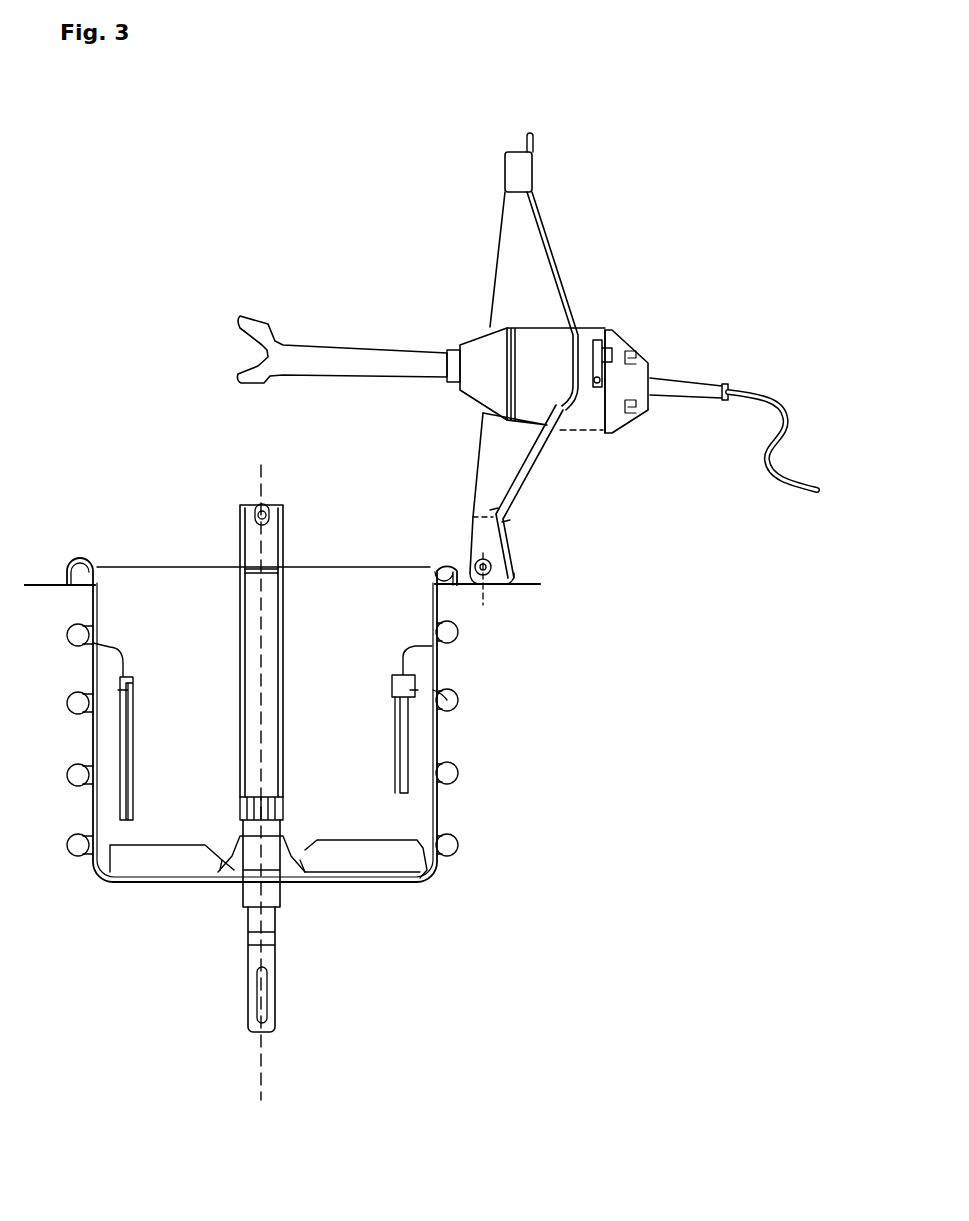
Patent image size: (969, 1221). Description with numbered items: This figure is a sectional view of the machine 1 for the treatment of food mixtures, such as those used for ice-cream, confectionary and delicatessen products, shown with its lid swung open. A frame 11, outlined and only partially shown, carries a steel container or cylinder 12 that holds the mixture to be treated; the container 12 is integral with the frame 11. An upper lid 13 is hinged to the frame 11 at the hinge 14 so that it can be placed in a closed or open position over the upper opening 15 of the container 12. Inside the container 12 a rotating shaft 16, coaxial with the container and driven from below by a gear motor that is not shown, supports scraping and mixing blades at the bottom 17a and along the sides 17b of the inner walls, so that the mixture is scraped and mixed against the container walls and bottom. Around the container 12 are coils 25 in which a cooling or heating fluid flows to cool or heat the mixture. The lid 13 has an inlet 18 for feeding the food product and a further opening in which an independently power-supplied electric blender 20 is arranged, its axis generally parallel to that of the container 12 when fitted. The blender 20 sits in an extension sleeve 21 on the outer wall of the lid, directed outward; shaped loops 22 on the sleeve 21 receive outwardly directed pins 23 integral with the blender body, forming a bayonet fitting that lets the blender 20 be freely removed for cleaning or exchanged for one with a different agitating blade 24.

The machine 1 is at (546, 827).
The frame 11 is at (43, 585).
The container or cylinder 12 is at (92, 717).
The upper lid 13 is at (550, 245).
The hinge 14 is at (510, 587).
The upper opening 15 is at (140, 587).
The rotating shaft 16 is at (240, 683).
The bottom scraping and mixing blades 17a is at (368, 860).
The side scraping and mixing blades 17b is at (417, 768).
The inlet 18 is at (532, 467).
The blender 20 is at (628, 332).
The extension sleeve 21 is at (593, 330).
The shaped loops 22 is at (605, 352).
The pins 23 is at (597, 350).
The agitating blade 24 is at (333, 352).
The coils 25 is at (440, 693).